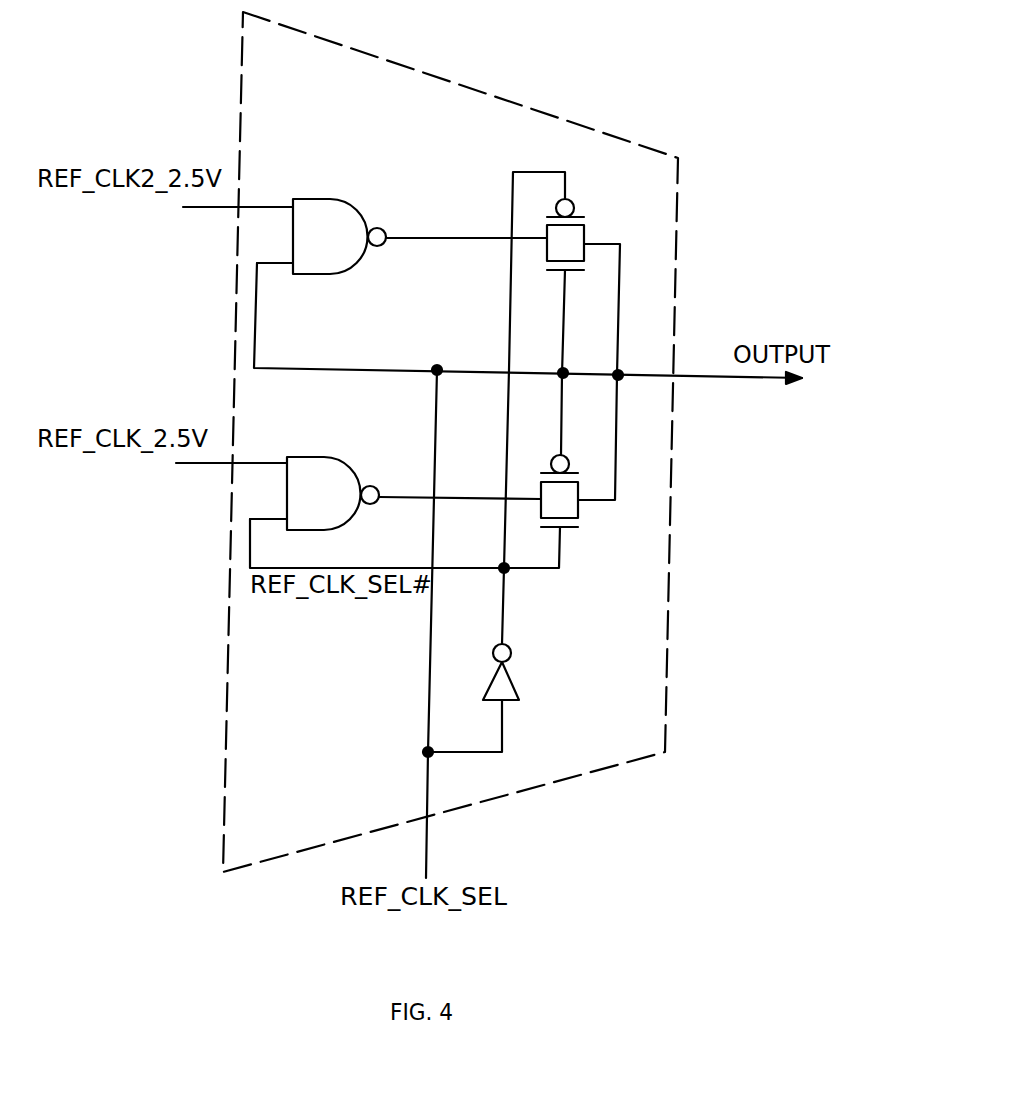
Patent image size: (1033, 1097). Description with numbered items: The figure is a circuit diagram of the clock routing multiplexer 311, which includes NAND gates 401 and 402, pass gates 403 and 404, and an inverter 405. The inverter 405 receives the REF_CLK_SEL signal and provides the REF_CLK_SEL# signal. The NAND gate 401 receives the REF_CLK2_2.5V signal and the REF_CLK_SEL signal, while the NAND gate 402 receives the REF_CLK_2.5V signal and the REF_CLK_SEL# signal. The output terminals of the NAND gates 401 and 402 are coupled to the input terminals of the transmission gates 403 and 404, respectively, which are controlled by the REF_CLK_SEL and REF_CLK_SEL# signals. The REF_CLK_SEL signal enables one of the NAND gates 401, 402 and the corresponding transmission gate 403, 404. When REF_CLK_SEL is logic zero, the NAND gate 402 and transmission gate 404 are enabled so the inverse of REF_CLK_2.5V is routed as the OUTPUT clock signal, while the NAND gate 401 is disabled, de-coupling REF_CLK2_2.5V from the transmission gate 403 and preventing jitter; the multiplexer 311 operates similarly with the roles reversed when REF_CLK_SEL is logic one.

The multiplexer 311 is at (550, 113).
The NAND gate 401 is at (312, 198).
The NAND gate 402 is at (310, 455).
The transmission gate 403 is at (584, 225).
The transmission gate 404 is at (577, 518).
The inverter 405 is at (510, 682).